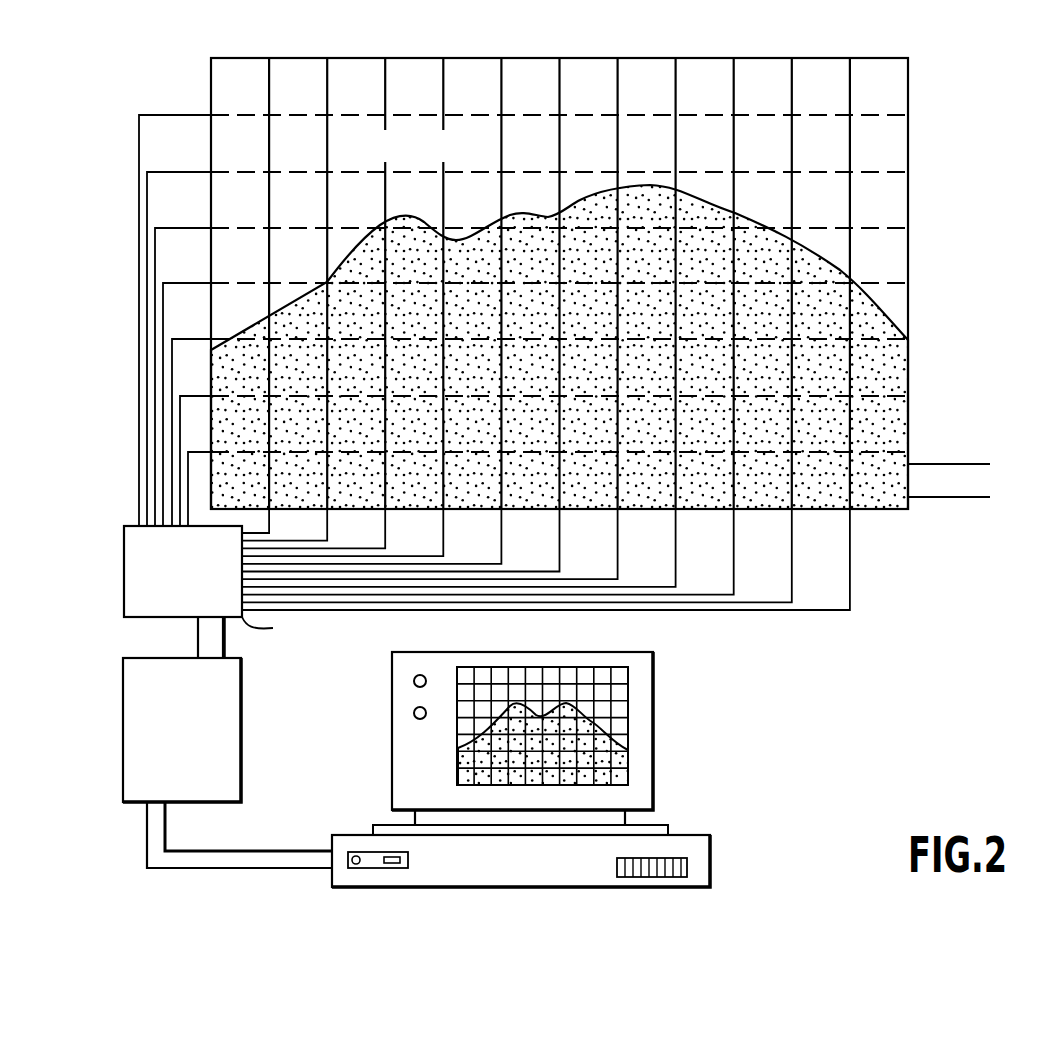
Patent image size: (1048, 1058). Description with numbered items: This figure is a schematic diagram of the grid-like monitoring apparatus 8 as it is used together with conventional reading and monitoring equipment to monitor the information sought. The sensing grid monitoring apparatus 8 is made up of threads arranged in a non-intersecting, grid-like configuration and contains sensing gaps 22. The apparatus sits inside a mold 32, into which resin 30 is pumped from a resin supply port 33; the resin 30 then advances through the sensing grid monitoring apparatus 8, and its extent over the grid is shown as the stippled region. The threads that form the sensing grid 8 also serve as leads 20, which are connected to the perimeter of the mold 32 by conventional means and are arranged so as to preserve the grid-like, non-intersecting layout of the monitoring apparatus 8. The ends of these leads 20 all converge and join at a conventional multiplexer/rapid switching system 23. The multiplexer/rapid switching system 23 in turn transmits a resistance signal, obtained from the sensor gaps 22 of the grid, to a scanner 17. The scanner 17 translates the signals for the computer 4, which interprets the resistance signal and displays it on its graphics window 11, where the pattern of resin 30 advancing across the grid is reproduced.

The grid-like monitoring apparatus 8 is at (130, 72).
The sensing gaps 22 is at (851, 115).
The mold 32 is at (908, 247).
The resin 30 is at (896, 366).
The resin supply port 33 is at (948, 482).
The leads 20 is at (162, 497).
The multiplexer/rapid switching system 23 is at (124, 565).
The scanner 17 is at (132, 710).
The graphics window 11 is at (610, 770).
The computer 4 is at (712, 867).